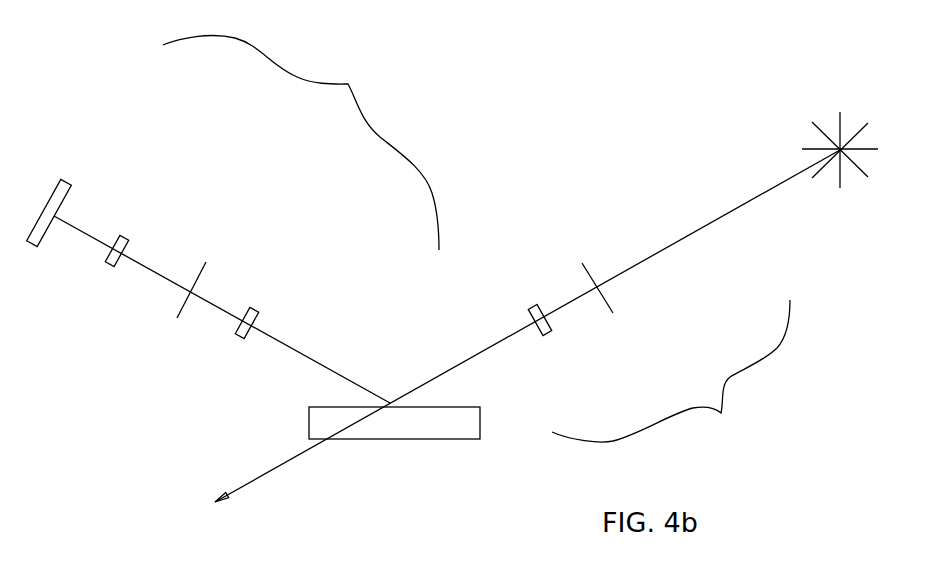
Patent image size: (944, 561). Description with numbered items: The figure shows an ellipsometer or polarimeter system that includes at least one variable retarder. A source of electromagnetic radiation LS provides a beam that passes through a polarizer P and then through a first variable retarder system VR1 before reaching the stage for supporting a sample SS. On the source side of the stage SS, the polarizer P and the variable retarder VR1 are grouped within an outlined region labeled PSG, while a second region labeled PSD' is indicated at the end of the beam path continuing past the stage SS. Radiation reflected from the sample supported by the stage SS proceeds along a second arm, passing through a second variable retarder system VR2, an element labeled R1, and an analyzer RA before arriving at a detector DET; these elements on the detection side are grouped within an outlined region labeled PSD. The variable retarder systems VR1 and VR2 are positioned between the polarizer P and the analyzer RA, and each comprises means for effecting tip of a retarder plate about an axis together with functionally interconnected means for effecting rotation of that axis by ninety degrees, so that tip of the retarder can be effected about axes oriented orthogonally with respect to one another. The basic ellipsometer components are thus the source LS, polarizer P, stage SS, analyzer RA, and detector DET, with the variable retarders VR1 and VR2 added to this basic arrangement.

The source of electromagnetic radiation LS is at (789, 127).
The polarizer P is at (652, 306).
The variable retarder system VR1 is at (606, 351).
The polarization state generator PSG is at (675, 371).
The stage for supporting a sample SS is at (418, 454).
The variable retarder system VR2 is at (321, 292).
The analyzer RA is at (252, 256).
The retarder R1 is at (186, 209).
The detector DET is at (127, 169).
The polarization state detector PSD is at (301, 143).
The alternate polarization state detector position PSD' is at (201, 515).